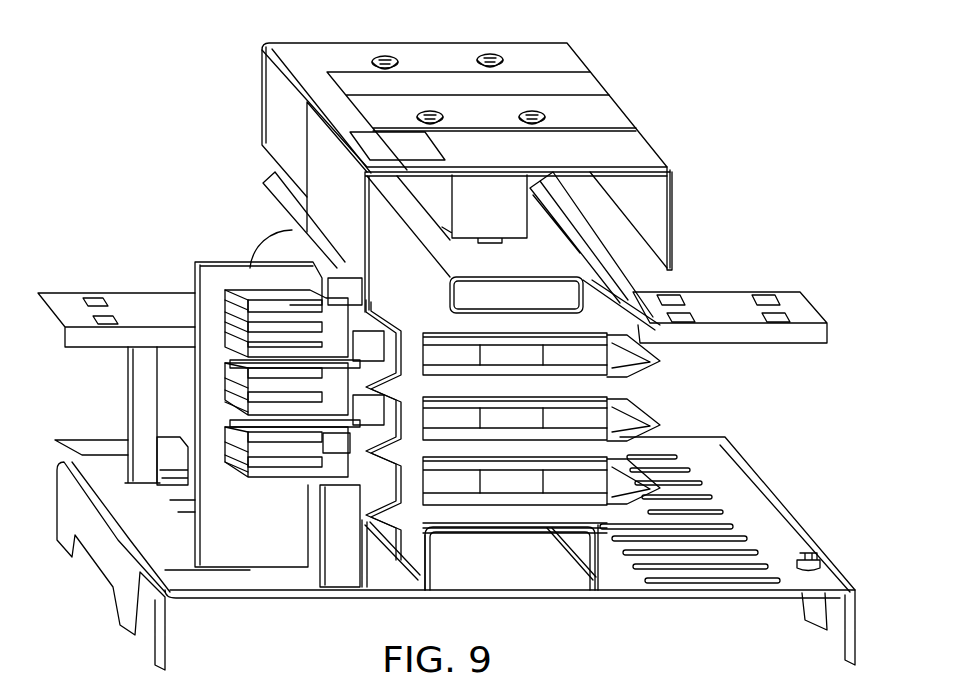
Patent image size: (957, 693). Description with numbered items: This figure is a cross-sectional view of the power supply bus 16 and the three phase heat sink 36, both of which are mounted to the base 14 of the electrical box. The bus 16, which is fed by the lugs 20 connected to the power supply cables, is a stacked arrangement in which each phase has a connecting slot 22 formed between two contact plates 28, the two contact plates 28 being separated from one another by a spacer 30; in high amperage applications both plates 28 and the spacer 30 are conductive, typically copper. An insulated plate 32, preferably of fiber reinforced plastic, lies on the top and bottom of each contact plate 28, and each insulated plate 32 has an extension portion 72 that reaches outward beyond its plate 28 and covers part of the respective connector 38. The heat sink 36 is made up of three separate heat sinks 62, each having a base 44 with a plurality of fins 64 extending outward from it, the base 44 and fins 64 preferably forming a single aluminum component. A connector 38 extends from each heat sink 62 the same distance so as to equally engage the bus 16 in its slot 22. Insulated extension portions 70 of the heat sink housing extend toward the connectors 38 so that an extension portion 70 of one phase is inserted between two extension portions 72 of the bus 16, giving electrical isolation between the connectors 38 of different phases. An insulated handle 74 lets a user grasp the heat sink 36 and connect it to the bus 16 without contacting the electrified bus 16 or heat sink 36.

The mounting structure 14 is at (65, 497).
The power supply bus 16 is at (580, 253).
The lug 20 is at (68, 292).
The connecting slot 22 is at (460, 352).
The contact plate 28 is at (617, 297).
The spacer 30 is at (535, 352).
The insulated plate 32 is at (598, 302).
The three phase heat sink 36 is at (195, 268).
The connector 38 is at (455, 505).
The base 44 is at (340, 322).
The heat sink 62 is at (203, 335).
The fin 64 is at (290, 325).
The insulated extension portion 70 is at (380, 369).
The extension portion 72 is at (383, 323).
The insulated handle 74 is at (128, 395).